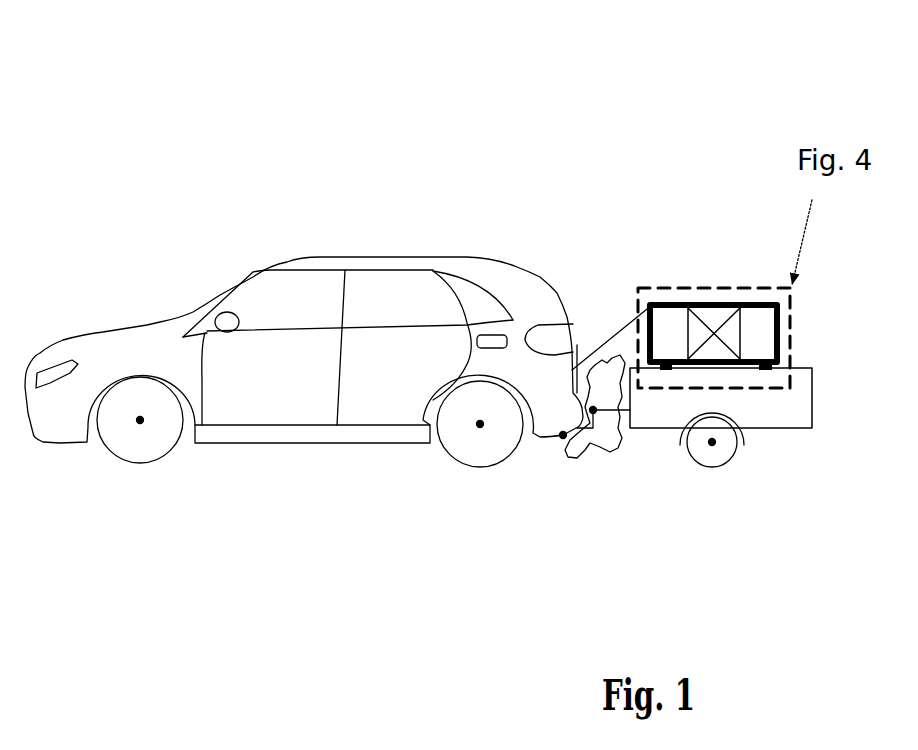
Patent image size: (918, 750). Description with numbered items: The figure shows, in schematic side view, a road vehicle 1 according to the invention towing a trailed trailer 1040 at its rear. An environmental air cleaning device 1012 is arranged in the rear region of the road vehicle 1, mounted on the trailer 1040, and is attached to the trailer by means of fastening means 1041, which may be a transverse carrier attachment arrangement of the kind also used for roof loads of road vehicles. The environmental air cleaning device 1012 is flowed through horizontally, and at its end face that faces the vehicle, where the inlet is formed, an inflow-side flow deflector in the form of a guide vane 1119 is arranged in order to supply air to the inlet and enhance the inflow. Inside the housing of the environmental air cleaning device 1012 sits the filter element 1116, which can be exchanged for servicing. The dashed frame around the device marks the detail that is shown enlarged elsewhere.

The road vehicle 1 is at (313, 183).
The guide vane 1119 is at (610, 340).
The environmental air cleaning device 1012 is at (673, 303).
The filter element 1116 is at (712, 317).
The trailer 1040 is at (662, 410).
The fastening means 1041 is at (767, 372).